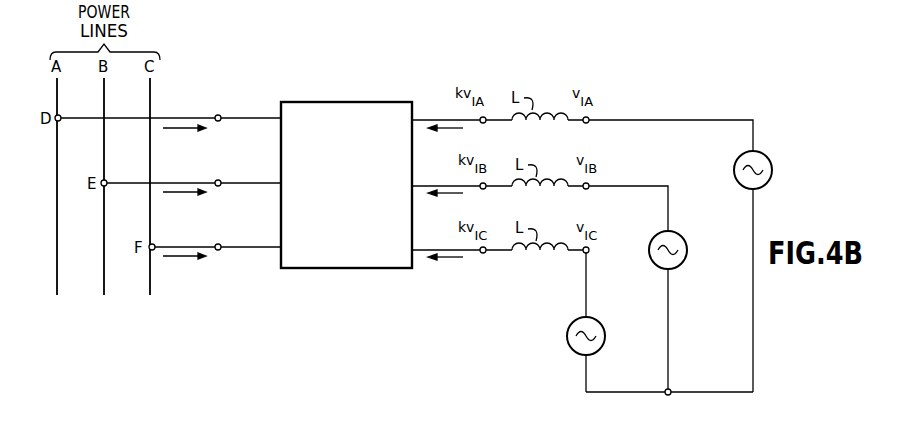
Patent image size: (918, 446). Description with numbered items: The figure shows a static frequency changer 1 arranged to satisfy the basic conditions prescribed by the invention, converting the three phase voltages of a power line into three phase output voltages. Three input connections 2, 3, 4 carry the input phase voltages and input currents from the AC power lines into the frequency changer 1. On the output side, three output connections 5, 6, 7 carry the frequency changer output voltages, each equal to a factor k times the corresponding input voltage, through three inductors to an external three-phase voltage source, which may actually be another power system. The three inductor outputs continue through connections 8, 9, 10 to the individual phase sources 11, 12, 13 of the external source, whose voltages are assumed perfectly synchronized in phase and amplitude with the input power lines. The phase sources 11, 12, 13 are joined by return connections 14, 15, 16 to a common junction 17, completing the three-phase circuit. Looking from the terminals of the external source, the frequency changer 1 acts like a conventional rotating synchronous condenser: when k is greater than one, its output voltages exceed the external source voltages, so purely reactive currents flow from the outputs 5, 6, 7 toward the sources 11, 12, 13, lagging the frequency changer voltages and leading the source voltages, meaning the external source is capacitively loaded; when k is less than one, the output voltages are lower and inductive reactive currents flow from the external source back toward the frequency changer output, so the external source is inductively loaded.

The static frequency changer 1 is at (375, 80).
The input line A 2 is at (262, 114).
The input line B 3 is at (268, 178).
The input line C 4 is at (268, 248).
The output line A 5 is at (433, 103).
The output line B 6 is at (433, 169).
The output line C 7 is at (433, 233).
The load connection line A 8 is at (686, 103).
The load connection line B 9 is at (657, 171).
The load connection line C 10 is at (585, 291).
The voltage source A 11 is at (740, 157).
The voltage source B 12 is at (679, 235).
The voltage source C 13 is at (597, 318).
The return line A 14 is at (751, 224).
The return line B 15 is at (665, 303).
The return line C 16 is at (583, 383).
The common node 17 is at (671, 390).